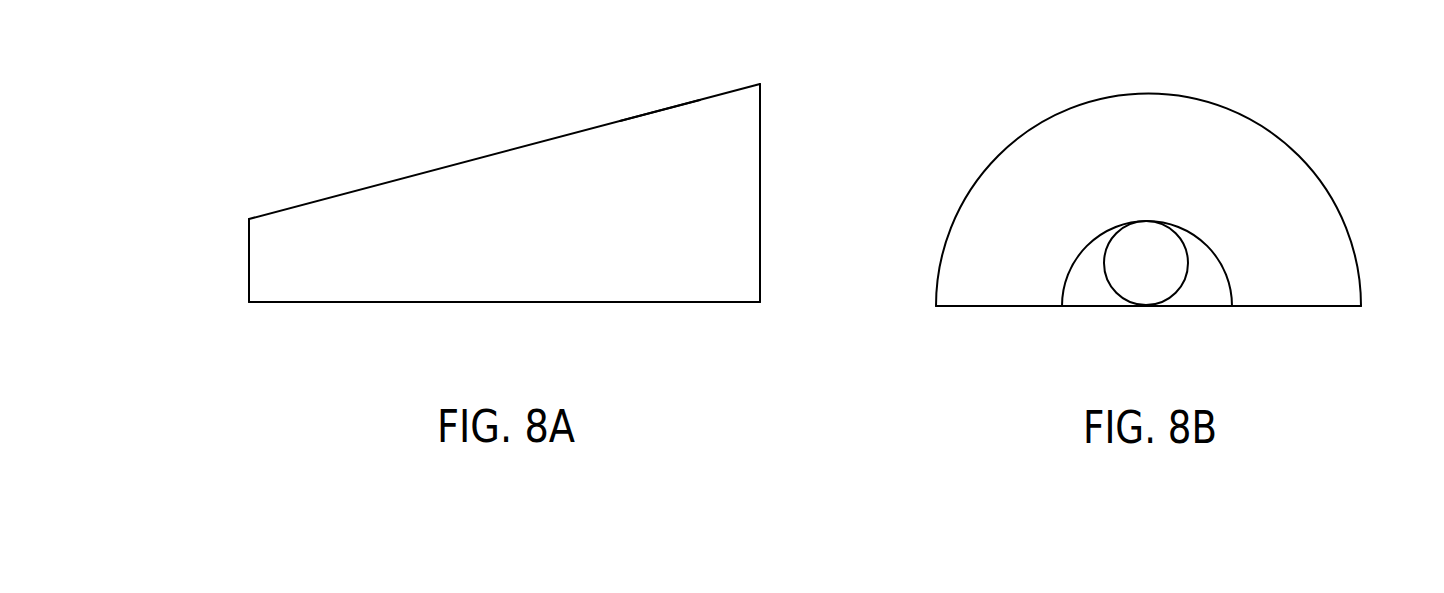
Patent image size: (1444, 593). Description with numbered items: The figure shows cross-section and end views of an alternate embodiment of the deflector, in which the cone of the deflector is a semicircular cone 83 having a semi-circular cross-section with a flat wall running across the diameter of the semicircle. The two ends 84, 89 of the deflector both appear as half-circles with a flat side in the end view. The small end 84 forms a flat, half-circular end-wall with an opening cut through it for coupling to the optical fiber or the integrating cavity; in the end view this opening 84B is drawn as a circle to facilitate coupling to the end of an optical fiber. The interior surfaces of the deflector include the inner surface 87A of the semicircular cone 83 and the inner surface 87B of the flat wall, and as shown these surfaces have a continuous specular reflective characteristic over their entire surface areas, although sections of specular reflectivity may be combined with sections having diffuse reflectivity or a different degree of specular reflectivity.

In FIG. 8A, the semicircular cone 83 is at (509, 148).
In FIG. 8A, the small end 84 is at (247, 217).
In FIG. 8B, the small end 84 is at (1229, 282).
In FIG. 8B, the bore of spacer 84B is at (1186, 252).
In FIG. 8A, the inner surface of the semicircular cone 87A is at (658, 112).
In FIG. 8B, the inner surface of the semicircular cone 87A is at (1008, 220).
In FIG. 8A, the inner surface of the flat wall 87B is at (691, 300).
In FIG. 8B, the inner surface of the flat wall 87B is at (1006, 305).
In FIG. 8A, the end 89 is at (761, 83).
In FIG. 8B, the end 89 is at (1002, 151).